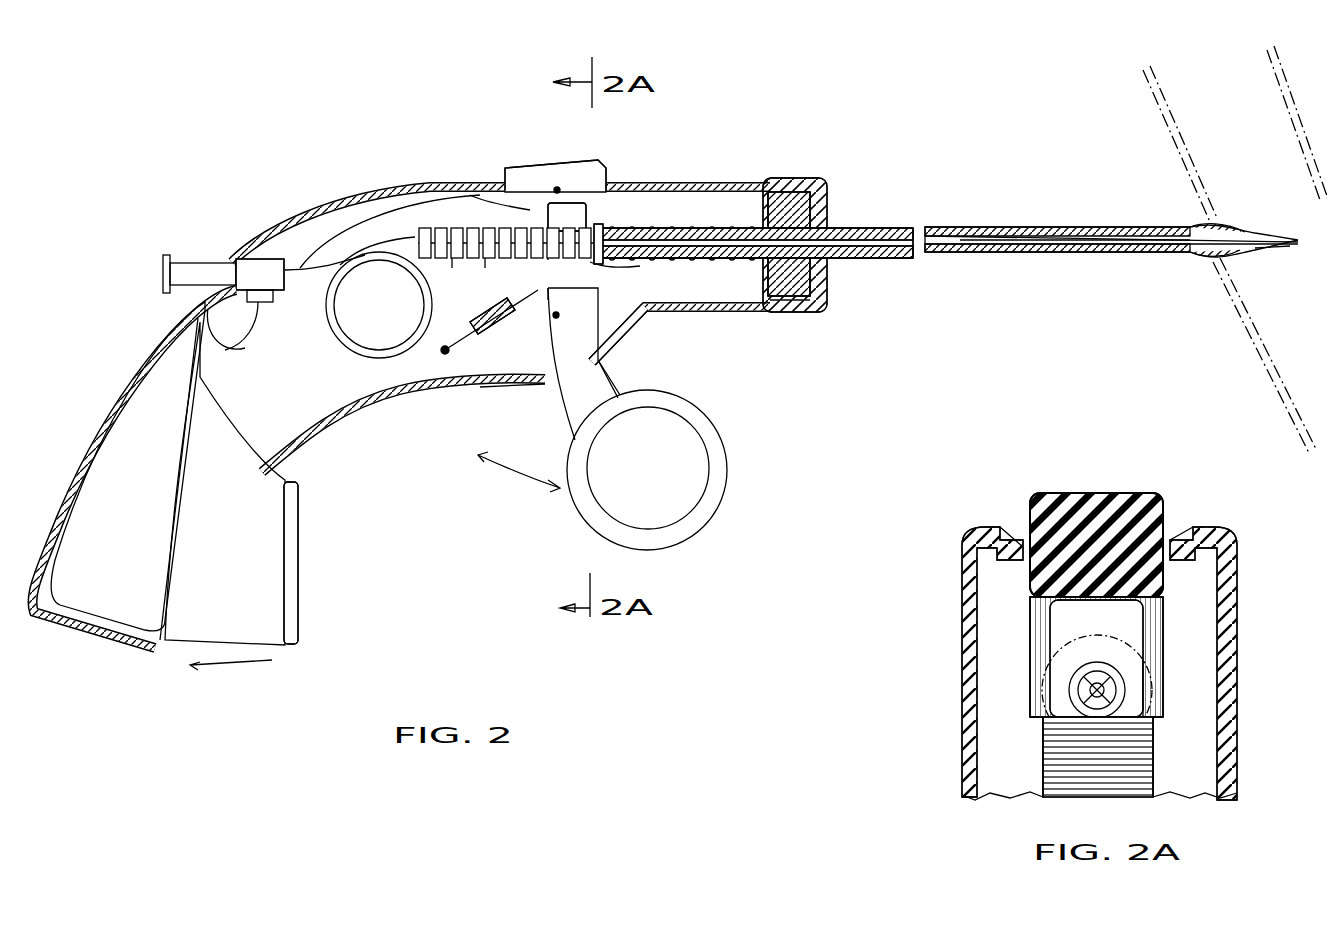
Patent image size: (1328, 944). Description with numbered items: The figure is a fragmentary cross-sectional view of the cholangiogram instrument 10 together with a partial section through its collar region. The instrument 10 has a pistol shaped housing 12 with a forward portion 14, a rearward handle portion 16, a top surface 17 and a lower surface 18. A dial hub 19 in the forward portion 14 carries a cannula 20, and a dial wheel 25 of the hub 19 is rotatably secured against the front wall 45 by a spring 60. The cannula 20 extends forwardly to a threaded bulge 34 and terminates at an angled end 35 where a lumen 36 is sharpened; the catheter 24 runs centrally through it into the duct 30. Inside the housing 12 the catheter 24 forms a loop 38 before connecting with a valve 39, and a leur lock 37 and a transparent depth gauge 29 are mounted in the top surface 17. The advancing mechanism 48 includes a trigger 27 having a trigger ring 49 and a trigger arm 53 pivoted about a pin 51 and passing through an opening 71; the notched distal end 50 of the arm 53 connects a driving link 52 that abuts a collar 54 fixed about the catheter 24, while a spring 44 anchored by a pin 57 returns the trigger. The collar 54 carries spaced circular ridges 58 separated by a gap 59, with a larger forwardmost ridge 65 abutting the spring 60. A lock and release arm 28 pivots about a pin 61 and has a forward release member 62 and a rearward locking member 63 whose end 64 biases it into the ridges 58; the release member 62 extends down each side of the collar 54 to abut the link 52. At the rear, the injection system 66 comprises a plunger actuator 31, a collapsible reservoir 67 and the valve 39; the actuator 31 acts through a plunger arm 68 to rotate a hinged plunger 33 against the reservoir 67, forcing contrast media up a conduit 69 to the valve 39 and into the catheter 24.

In FIG. 2, the instrument 10 is at (933, 83).
In FIG. 2, the housing 12 is at (341, 182).
In FIG. 2A, the housing 12 is at (1246, 582).
In FIG. 2, the forward portion 14 is at (826, 193).
In FIG. 2, the rearward handle portion 16 is at (100, 390).
In FIG. 2, the top surface 17 is at (396, 182).
In FIG. 2A, the top surface 17 is at (1192, 532).
In FIG. 2, the lower surface 18 is at (354, 404).
In FIG. 2, the dial hub 19 is at (816, 224).
In FIG. 2, the cannula 20 is at (980, 235).
In FIG. 2, the catheter 24 is at (1012, 248).
In FIG. 2A, the catheter 24 is at (1125, 686).
In FIG. 2, the dial wheel 25 is at (780, 308).
In FIG. 2, the trigger 27 is at (592, 539).
In FIG. 2, the lock and release arm 28 is at (540, 172).
In FIG. 2A, the lock and release arm 28 is at (1092, 495).
In FIG. 2, the depth gauge 29 is at (664, 184).
In FIG. 2, the duct 30 is at (1238, 126).
In FIG. 2, the plunger actuator 31 is at (300, 612).
In FIG. 2, the plunger 33 is at (195, 650).
In FIG. 2, the threaded bulge 34 is at (1210, 258).
In FIG. 2, the angled end 35 is at (1288, 236).
In FIG. 2, the lumen 36 is at (1257, 258).
In FIG. 2, the leur lock 37 is at (198, 265).
In FIG. 2, the loop 38 is at (358, 297).
In FIG. 2, the valve 39 is at (268, 300).
In FIG. 2, the spring 44 is at (478, 340).
In FIG. 2, the front wall 45 is at (811, 290).
In FIG. 2, the advancing mechanism 48 is at (636, 318).
In FIG. 2, the trigger ring 49 is at (708, 488).
In FIG. 2, the distal end 50 is at (572, 298).
In FIG. 2A, the distal end 50 is at (1060, 698).
In FIG. 2, the pin 51 is at (554, 318).
In FIG. 2, the driving link 52 is at (597, 262).
In FIG. 2A, the driving link 52 is at (1135, 765).
In FIG. 2, the trigger arm 53 is at (590, 386).
In FIG. 2, the collar 54 is at (416, 233).
In FIG. 2A, the collar 54 is at (1137, 662).
In FIG. 2, the pin 57 is at (436, 352).
In FIG. 2, the ridges 58 is at (463, 260).
In FIG. 2A, the ridges 58 is at (1143, 710).
In FIG. 2, the gap 59 is at (500, 260).
In FIG. 2, the spring 60 is at (690, 226).
In FIG. 2, the pin 61 is at (558, 188).
In FIG. 2A, the pin 61 is at (1012, 547).
In FIG. 2, the release member 62 is at (590, 214).
In FIG. 2A, the release member 62 is at (1034, 660).
In FIG. 2, the locking member 63 is at (546, 232).
In FIG. 2A, the locking member 63 is at (1068, 660).
In FIG. 2, the end 64 is at (484, 190).
In FIG. 2, the forwardmost ridge 65 is at (622, 266).
In FIG. 2A, the forwardmost ridge 65 is at (1046, 735).
In FIG. 2, the injection system 66 is at (306, 654).
In FIG. 2, the reservoir 67 is at (128, 466).
In FIG. 2, the plunger arm 68 is at (222, 481).
In FIG. 2, the conduit 69 is at (245, 345).
In FIG. 2, the opening 71 is at (505, 385).